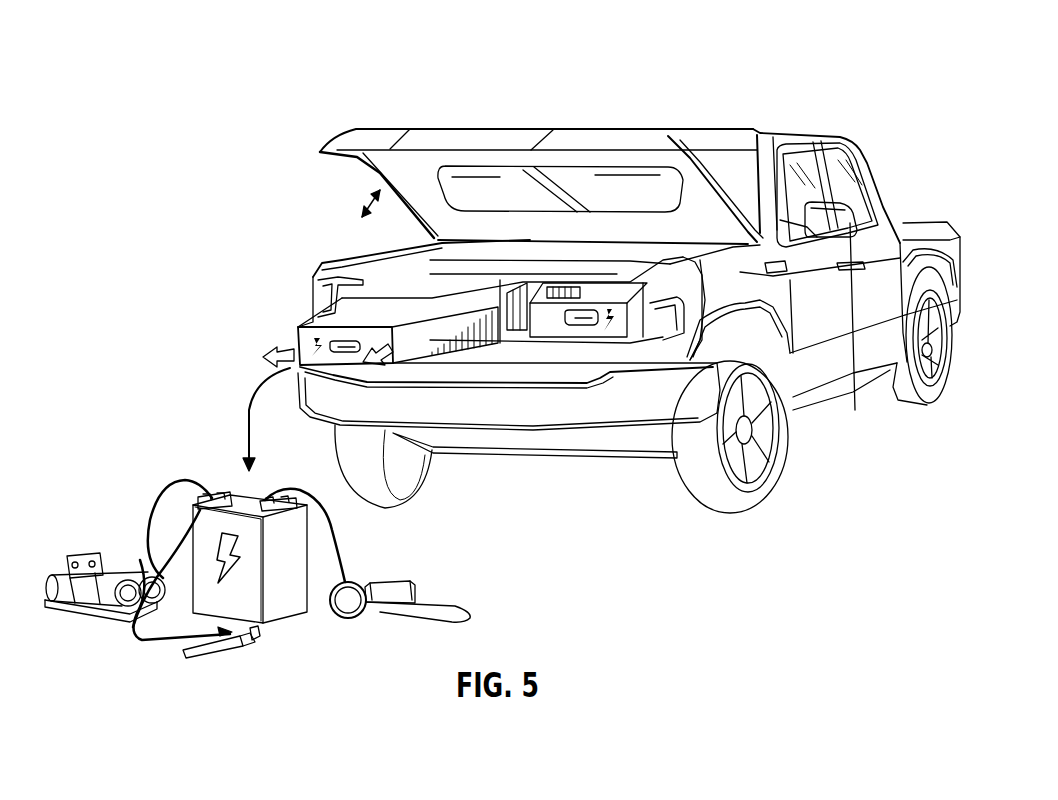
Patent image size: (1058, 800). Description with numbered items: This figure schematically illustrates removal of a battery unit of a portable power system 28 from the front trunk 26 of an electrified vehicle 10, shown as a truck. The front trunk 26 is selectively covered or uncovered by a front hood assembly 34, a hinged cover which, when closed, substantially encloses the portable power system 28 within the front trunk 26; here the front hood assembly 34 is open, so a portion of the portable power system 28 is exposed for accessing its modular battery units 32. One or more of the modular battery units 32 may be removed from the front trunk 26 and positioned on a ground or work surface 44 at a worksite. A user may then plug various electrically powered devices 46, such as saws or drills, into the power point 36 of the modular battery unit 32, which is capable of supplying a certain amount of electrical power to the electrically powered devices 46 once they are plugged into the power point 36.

The electrified vehicle 10 is at (302, 68).
The front trunk 26 is at (443, 277).
The portable power system 28 is at (605, 279).
The modular battery unit 32 is at (420, 357).
The front hood assembly 34 is at (578, 127).
The power point 36 is at (263, 497).
The ground or work surface 44 is at (282, 624).
The electrically powered devices 46 is at (96, 617).